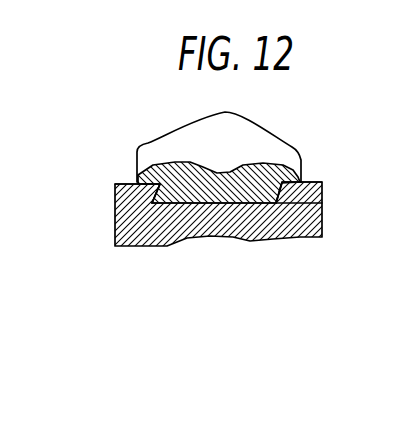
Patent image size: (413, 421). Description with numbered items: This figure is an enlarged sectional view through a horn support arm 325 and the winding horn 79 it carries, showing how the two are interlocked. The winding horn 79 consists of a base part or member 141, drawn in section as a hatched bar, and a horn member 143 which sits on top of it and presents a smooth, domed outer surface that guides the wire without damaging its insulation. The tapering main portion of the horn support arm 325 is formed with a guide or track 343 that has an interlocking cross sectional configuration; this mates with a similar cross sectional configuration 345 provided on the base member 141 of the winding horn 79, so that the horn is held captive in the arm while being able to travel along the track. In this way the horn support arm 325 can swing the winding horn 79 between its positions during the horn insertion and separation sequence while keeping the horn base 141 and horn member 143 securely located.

The winding horn 79 is at (304, 134).
The base part or member 141 is at (210, 187).
The horn member 143 is at (231, 127).
The horn support arm 325 is at (238, 228).
The guide or track 343 is at (158, 204).
The interlocking cross sectional configuration 345 is at (263, 200).